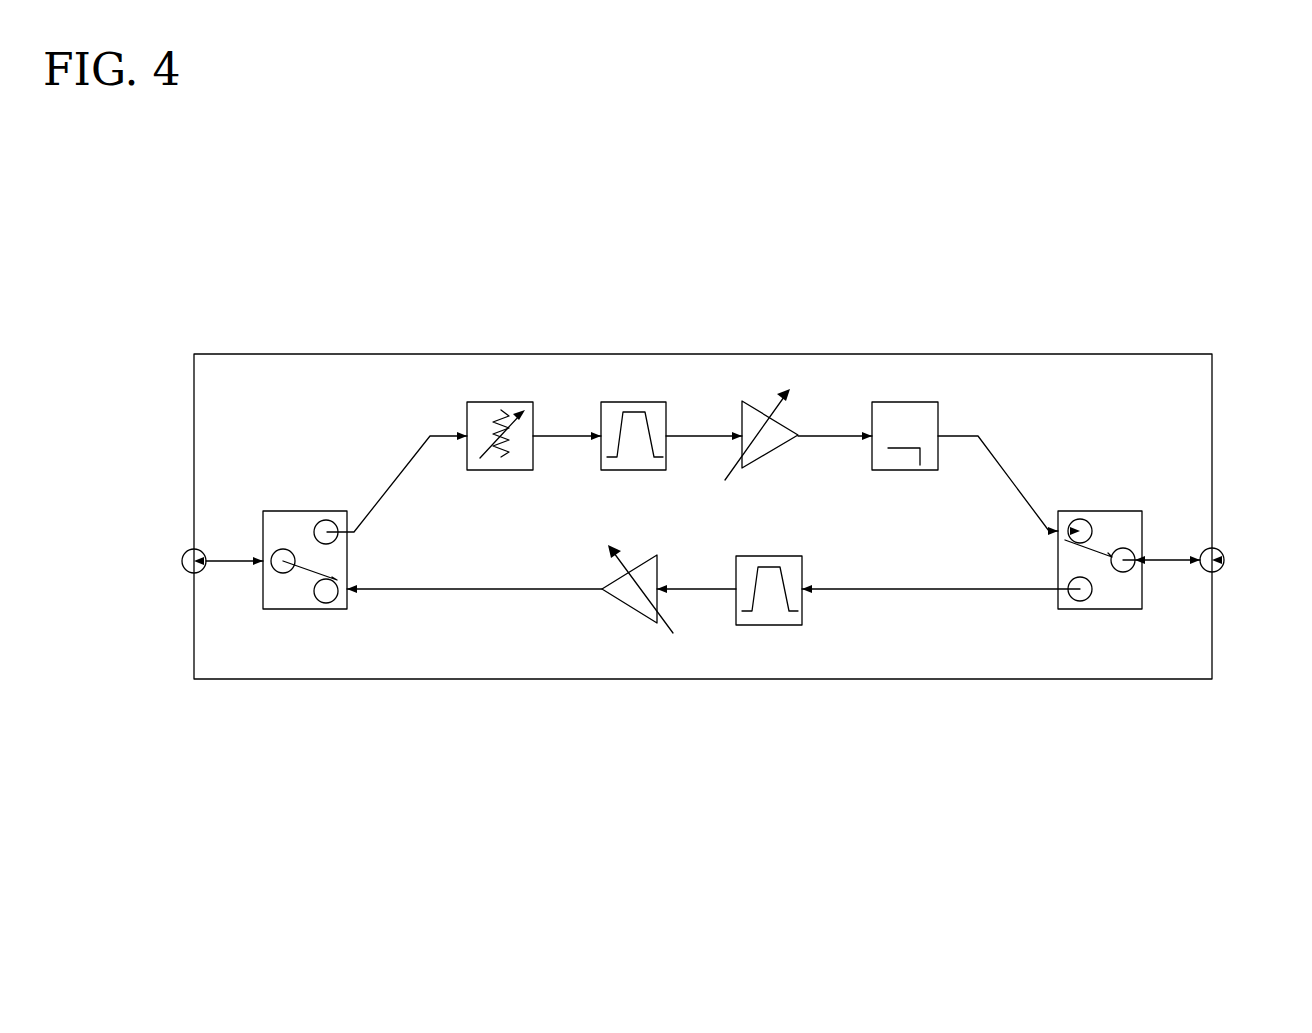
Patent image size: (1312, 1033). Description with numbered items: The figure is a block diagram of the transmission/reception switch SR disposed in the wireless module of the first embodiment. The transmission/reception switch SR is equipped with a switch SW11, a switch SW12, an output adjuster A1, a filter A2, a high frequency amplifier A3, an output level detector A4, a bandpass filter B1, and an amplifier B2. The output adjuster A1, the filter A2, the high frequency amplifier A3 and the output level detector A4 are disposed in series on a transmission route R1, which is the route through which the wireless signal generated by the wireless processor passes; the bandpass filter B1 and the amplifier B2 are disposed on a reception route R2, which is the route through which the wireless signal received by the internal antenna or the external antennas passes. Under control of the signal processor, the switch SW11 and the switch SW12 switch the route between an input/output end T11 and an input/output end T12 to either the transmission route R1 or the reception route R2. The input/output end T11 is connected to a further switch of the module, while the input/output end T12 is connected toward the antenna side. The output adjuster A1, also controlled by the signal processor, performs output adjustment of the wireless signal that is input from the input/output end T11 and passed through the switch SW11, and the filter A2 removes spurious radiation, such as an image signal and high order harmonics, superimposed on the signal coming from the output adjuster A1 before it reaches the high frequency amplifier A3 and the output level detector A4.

The transmission/reception switch SR is at (753, 354).
The input/output end T11 is at (182, 551).
The input/output end T12 is at (1224, 553).
The switch SW11 is at (305, 511).
The switch SW12 is at (1098, 511).
The transmission route R1 is at (392, 437).
The reception route R2 is at (506, 604).
The output adjuster A1 is at (497, 401).
The filter A2 is at (646, 402).
The high frequency amplifier A3 is at (785, 420).
The output level detector A4 is at (918, 402).
The bandpass filter B1 is at (768, 556).
The amplifier B2 is at (641, 555).